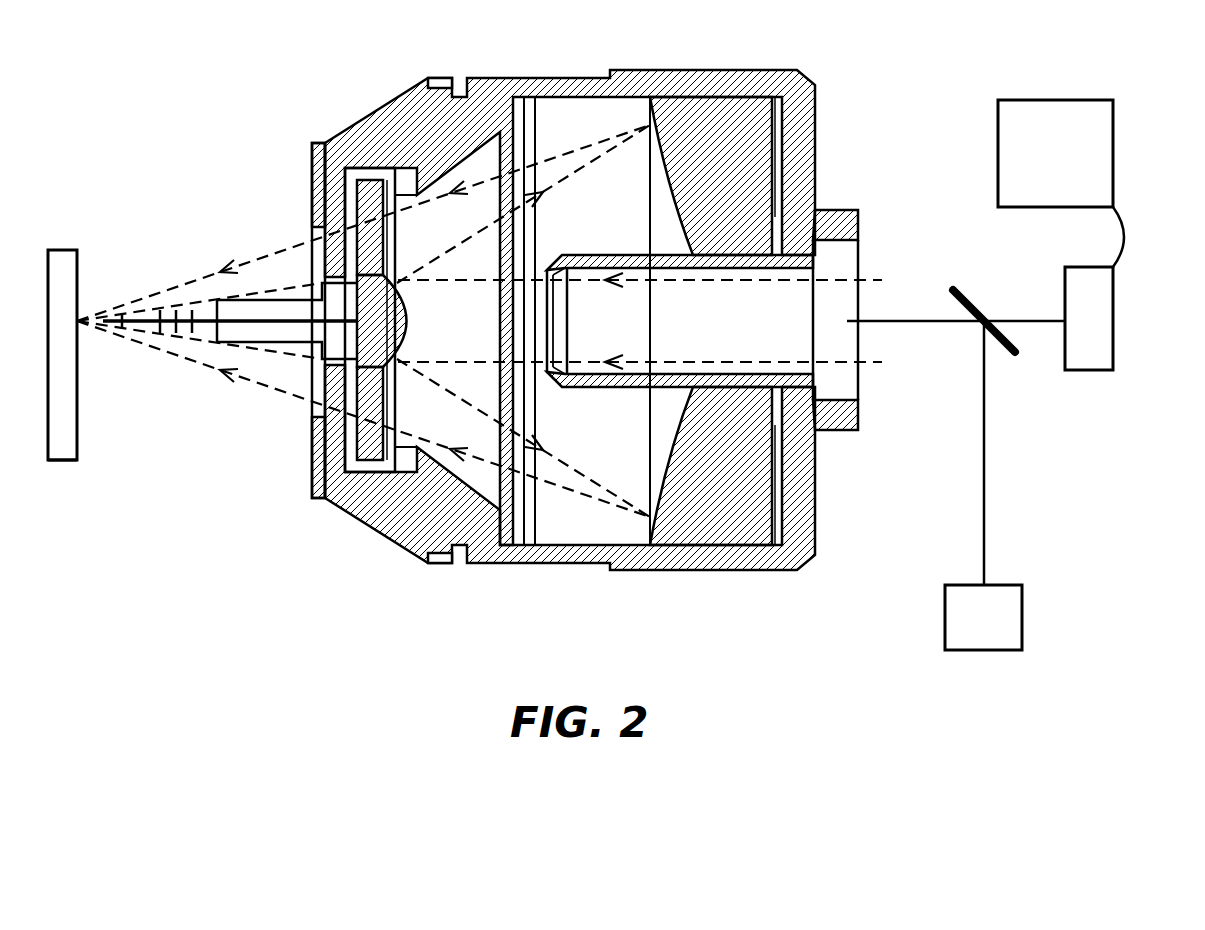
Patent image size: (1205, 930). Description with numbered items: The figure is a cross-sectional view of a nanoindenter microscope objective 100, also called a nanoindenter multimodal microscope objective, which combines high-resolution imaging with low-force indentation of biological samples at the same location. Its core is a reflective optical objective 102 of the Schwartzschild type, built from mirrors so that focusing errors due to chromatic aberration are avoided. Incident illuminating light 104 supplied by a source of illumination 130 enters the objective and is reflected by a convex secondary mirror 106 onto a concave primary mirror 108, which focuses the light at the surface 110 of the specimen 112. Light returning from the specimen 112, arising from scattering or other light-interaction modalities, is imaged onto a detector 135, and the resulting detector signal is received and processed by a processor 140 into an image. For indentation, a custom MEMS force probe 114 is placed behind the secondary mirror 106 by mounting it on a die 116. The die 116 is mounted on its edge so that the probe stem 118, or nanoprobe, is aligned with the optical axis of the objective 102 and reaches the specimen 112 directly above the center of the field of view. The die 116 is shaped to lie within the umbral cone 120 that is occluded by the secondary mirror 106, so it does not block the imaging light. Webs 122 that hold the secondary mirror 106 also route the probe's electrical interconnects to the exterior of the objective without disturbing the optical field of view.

The nanoindenter microscope objective 100 is at (793, 48).
The optical objective 102 is at (806, 556).
The incident illuminating light 104 is at (843, 280).
The convex secondary mirror 106 is at (397, 303).
The concave primary mirror 108 is at (673, 460).
The surface 110 is at (78, 352).
The specimen 112 is at (50, 462).
The MEMS force probe 114 is at (165, 337).
The die 116 is at (297, 347).
The probe stem 118 is at (143, 313).
The umbral cone 120 is at (260, 308).
The webs 122 is at (370, 190).
The source of illumination 130 is at (962, 632).
The detector 135 is at (1068, 332).
The processor 140 is at (1034, 167).